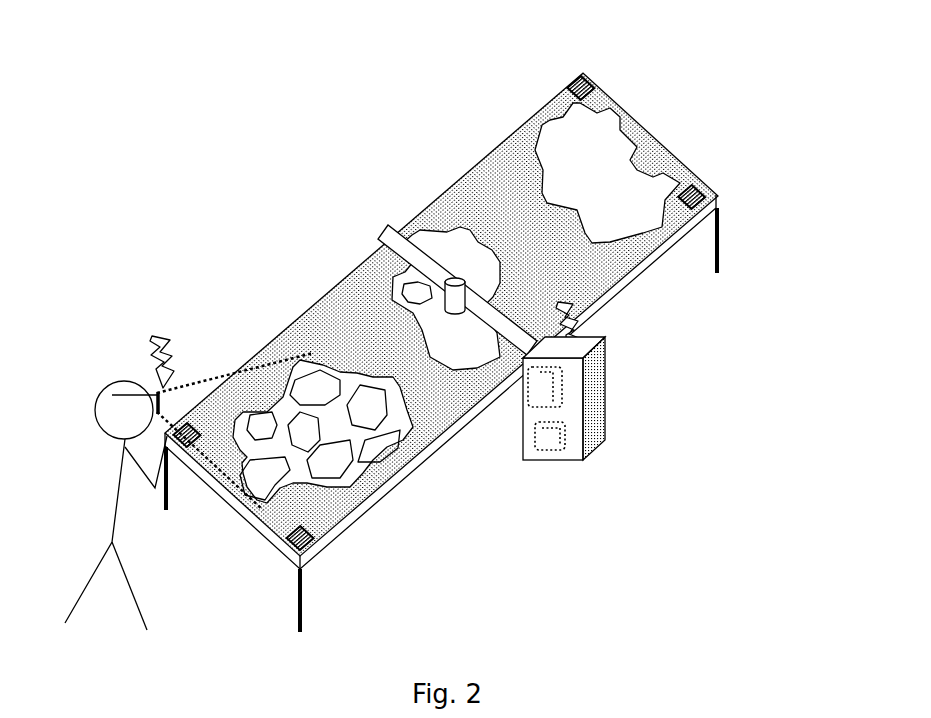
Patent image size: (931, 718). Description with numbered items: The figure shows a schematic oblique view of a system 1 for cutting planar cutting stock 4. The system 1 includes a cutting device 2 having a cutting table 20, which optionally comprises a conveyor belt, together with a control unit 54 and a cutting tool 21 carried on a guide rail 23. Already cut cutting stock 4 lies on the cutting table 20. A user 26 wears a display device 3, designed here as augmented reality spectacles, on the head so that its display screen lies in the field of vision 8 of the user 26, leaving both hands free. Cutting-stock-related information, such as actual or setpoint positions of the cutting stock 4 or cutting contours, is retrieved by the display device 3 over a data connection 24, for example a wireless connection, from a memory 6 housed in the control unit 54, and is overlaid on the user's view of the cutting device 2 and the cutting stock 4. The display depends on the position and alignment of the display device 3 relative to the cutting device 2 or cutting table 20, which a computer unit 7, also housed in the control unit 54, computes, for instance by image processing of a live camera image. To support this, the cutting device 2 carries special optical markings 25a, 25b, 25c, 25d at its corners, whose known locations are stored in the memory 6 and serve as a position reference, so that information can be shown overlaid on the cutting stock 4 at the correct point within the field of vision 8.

The system 1 is at (136, 77).
The cutting device 2 is at (441, 328).
The cutting table 20 is at (441, 314).
The cutting stock 4 is at (484, 316).
The guide rail 23 is at (408, 283).
The cutting tool 21 is at (373, 293).
The field of vision 8 is at (207, 376).
The data connection 24 is at (411, 342).
The optical marking 25a is at (217, 376).
The optical marking 25b is at (364, 562).
The optical marking 25c is at (733, 184).
The optical marking 25d is at (620, 75).
The display device 3 is at (127, 380).
The user 26 is at (151, 505).
The control unit 54 is at (628, 398).
The memory 6 is at (628, 395).
The computer unit 7 is at (631, 441).